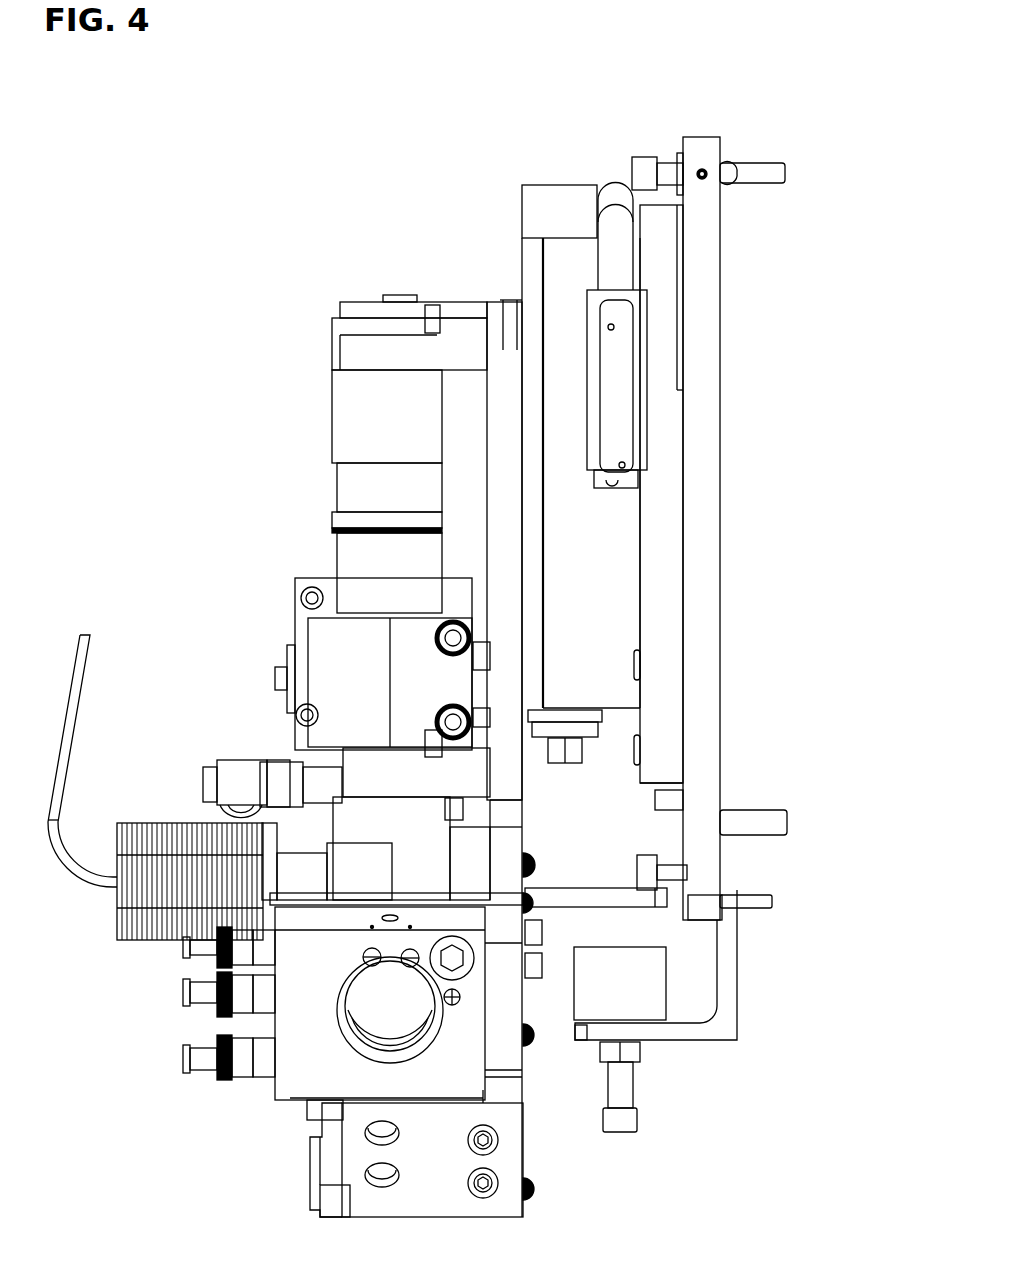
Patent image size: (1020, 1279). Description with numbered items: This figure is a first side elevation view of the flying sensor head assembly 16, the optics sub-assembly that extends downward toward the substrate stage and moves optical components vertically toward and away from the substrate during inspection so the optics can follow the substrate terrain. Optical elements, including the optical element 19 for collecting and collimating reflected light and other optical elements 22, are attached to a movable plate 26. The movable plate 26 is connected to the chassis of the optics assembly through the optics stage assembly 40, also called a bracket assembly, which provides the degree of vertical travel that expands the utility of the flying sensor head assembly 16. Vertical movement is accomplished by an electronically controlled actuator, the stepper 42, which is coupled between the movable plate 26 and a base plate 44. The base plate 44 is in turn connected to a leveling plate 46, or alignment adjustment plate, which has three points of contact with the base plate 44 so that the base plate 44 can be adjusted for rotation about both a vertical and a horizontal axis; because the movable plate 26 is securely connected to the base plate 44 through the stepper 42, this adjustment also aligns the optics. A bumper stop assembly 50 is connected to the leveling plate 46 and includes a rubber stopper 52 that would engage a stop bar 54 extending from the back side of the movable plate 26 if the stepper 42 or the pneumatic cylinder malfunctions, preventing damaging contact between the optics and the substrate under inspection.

The flying sensor head assembly 16 is at (226, 226).
The optical element 19 is at (324, 1070).
The other optical elements 22 is at (408, 430).
The movable plate 26 is at (500, 352).
The optics stage assembly 40 is at (720, 90).
The stepper 42 is at (612, 615).
The base plate 44 is at (670, 248).
The leveling plate 46 is at (706, 342).
The bumper stop assembly 50 is at (758, 1015).
The rubber stopper 52 is at (633, 1002).
The stop bar 54 is at (597, 890).